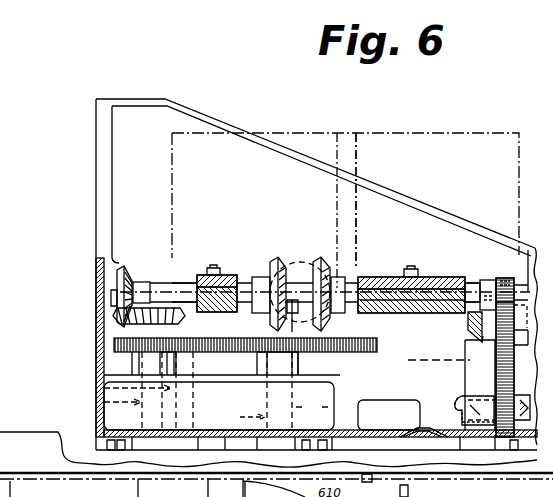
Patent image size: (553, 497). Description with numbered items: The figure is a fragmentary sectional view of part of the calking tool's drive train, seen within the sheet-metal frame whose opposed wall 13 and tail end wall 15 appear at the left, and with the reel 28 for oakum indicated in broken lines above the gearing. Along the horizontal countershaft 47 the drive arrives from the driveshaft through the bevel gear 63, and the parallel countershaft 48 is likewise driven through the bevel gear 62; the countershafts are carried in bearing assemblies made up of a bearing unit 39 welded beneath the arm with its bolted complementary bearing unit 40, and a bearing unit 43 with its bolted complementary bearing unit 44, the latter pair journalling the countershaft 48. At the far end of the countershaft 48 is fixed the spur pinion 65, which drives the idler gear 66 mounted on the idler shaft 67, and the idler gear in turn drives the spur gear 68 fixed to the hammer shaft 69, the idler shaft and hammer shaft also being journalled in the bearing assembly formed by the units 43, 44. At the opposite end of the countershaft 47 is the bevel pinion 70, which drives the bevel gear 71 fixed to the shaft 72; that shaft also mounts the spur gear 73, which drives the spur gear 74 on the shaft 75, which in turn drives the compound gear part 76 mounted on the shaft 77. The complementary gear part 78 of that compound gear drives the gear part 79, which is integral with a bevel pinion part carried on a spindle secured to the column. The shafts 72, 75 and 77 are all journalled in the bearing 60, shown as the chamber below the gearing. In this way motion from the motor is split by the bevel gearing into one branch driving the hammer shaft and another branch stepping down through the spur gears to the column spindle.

The opposed wall 13 is at (100, 162).
The tail end wall 15 is at (126, 193).
The reel 28 is at (165, 158).
The bevel pinion 70 is at (118, 283).
The countershaft 47 is at (112, 300).
The bevel gear 71 is at (178, 322).
The bearing unit 39 is at (225, 313).
The complementary bearing unit 40 is at (200, 276).
The bevel gear 63 is at (276, 263).
The complementary gear part 78 is at (298, 278).
The bevel gear 62 is at (356, 266).
The complementary bearing unit 44 is at (385, 276).
The bearing unit 43 is at (405, 314).
The countershaft 48 is at (470, 282).
The spur pinion 65 is at (504, 280).
The spur gear 68 is at (505, 440).
The idler gear 66 is at (469, 338).
The idler shaft 67 is at (412, 358).
The gear part 79 is at (523, 316).
The hammer shaft 69 is at (475, 438).
The spur gear 73 is at (112, 347).
The compound gear part 76 is at (240, 357).
The spur gear 74 is at (222, 348).
The shaft 75 is at (96, 388).
The shaft 72 is at (96, 404).
The shaft 77 is at (240, 419).
The bearing 60 is at (312, 407).